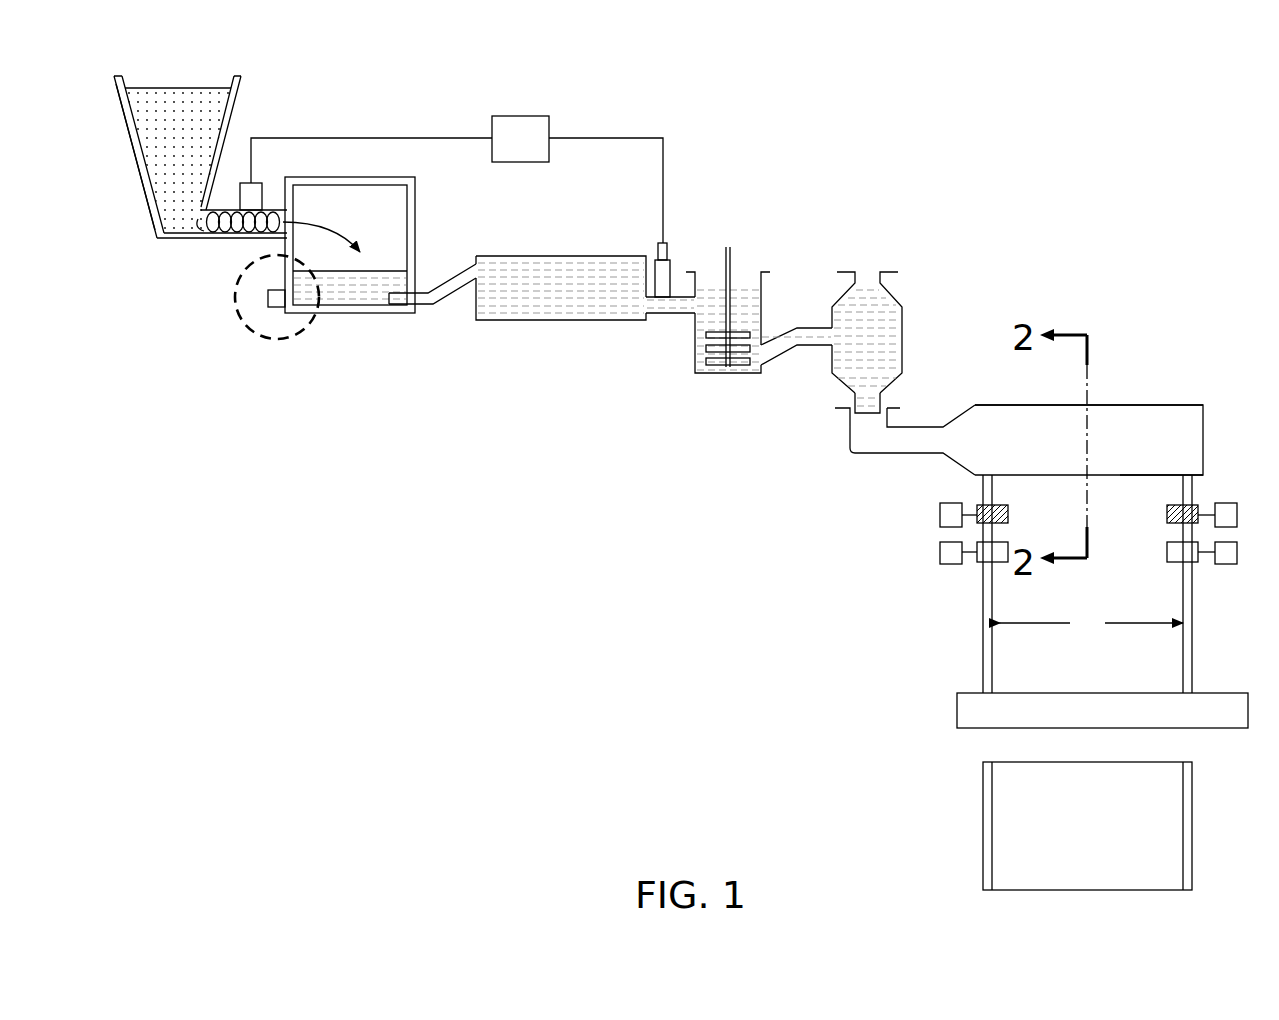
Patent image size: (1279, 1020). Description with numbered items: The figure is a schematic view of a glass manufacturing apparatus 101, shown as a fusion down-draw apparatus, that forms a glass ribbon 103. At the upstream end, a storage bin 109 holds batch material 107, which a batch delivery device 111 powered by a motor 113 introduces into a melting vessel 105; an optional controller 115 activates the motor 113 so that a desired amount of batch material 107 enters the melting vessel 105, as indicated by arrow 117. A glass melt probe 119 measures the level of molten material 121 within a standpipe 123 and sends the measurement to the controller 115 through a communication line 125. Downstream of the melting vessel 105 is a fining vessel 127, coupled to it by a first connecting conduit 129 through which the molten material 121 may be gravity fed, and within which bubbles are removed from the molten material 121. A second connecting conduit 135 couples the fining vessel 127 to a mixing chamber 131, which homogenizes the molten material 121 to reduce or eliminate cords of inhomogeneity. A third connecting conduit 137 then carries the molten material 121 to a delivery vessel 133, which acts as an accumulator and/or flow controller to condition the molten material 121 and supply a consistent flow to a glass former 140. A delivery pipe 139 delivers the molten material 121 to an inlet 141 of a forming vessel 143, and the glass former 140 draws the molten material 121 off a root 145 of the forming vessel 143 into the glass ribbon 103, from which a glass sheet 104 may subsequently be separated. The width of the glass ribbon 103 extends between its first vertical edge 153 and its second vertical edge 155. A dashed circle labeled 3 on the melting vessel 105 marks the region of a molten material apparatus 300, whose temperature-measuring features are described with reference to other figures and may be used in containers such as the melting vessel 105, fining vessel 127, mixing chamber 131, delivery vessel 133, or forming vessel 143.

The glass manufacturing apparatus 101 is at (898, 177).
The glass ribbon 103 is at (1057, 483).
The glass sheet 104 is at (1000, 837).
The melting vessel 105 is at (330, 337).
The batch material 107 is at (168, 88).
The storage bin 109 is at (135, 157).
The batch delivery device 111 is at (227, 235).
The motor 113 is at (257, 181).
The controller 115 is at (518, 116).
The arrow 117 is at (315, 224).
The glass melt probe 119 is at (658, 247).
The molten material 121 is at (385, 270).
The standpipe 123 is at (670, 267).
The communication line 125 is at (600, 138).
The fining vessel 127 is at (553, 256).
The first connecting conduit 129 is at (452, 273).
The mixing chamber 131 is at (767, 293).
The delivery vessel 133 is at (903, 310).
The second connecting conduit 135 is at (675, 315).
The third connecting conduit 137 is at (782, 358).
The delivery pipe 139 is at (880, 398).
The inlet 141 is at (843, 432).
The forming vessel 143 is at (998, 402).
The root 145 is at (1125, 482).
The glass former 140 is at (1088, 511).
The first vertical edge 153 is at (983, 605).
The second vertical edge 155 is at (1192, 607).
The detail view circle 3 is at (235, 293).
The molten material apparatus 300 is at (260, 340).